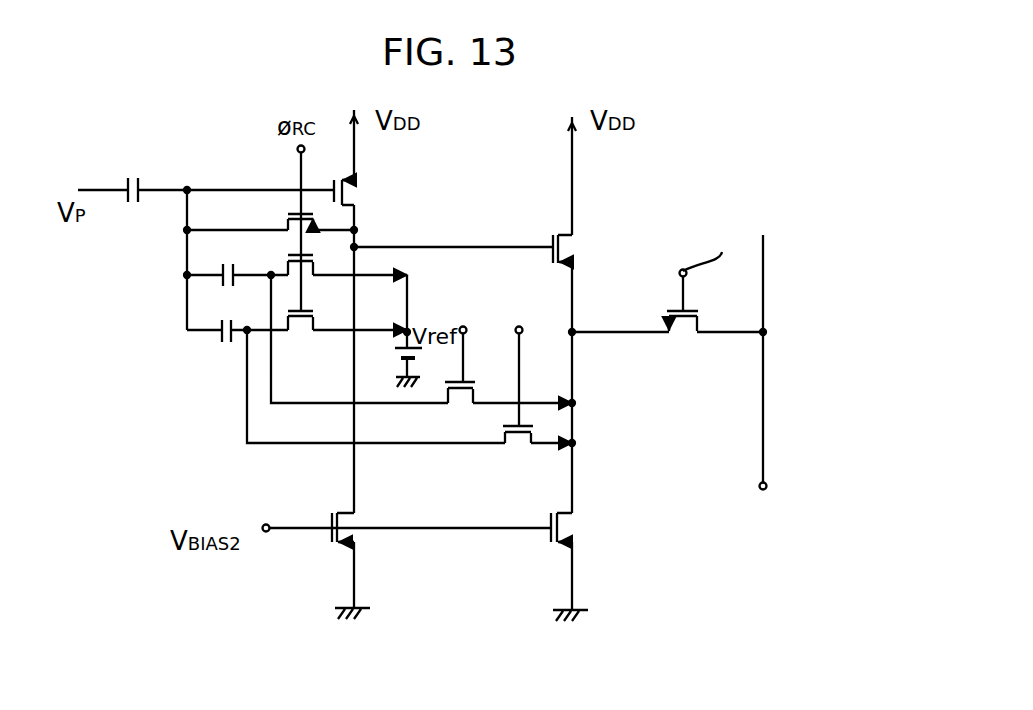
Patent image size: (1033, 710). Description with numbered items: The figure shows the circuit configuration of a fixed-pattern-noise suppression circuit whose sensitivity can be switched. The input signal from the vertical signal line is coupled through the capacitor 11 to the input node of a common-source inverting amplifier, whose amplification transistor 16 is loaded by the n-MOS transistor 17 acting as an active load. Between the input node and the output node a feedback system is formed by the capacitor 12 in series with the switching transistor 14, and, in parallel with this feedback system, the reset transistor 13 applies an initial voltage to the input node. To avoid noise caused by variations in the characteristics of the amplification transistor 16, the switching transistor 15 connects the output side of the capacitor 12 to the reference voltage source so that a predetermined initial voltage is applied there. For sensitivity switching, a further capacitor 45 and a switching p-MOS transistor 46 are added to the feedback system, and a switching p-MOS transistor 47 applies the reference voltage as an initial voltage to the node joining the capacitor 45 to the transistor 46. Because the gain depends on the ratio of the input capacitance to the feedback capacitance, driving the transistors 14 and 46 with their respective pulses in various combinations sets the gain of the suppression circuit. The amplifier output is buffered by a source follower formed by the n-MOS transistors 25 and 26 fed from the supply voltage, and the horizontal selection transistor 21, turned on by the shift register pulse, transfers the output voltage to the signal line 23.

The capacitor 11 is at (137, 217).
The capacitor 12 is at (228, 297).
The reset transistor 13 is at (283, 217).
The switching transistor 14 is at (462, 404).
The switching transistor 15 is at (318, 263).
The amplification transistor 16 is at (363, 195).
The load transistor 17 is at (323, 553).
The horizontal selection transistor 21 is at (681, 334).
The signal line 23 is at (758, 425).
The n-MOS transistor 25 is at (577, 529).
The n-MOS transistor 26 is at (575, 247).
The capacitor 45 is at (230, 353).
The switching p-MOS transistor 46 is at (518, 444).
The switching p-MOS transistor 47 is at (302, 330).